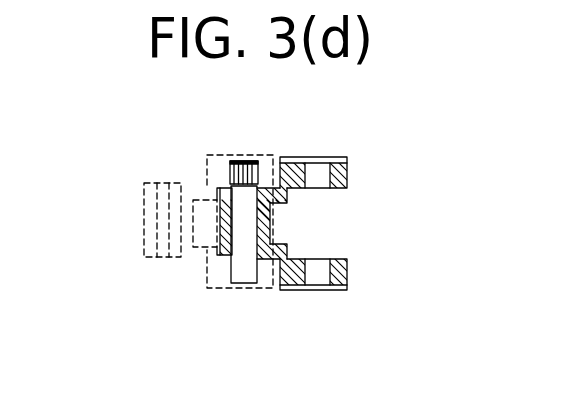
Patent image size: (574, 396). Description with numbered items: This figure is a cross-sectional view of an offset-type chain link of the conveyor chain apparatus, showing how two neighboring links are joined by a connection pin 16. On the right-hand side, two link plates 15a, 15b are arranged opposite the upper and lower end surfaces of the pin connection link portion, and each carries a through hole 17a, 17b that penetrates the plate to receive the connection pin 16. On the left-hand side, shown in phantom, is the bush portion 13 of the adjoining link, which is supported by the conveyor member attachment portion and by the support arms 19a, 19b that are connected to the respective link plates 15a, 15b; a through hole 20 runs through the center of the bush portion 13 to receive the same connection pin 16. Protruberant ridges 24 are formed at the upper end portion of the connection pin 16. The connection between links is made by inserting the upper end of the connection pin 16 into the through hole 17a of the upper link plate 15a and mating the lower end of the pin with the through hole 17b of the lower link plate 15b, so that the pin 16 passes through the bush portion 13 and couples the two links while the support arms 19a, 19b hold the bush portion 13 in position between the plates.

The bush portion 13 is at (147, 225).
The through hole 20 is at (161, 215).
The protruberant ridges 24 is at (233, 170).
The connection pin 16 is at (243, 228).
The support arm 19a is at (196, 190).
The support arm 19b is at (202, 255).
The link plate 15a is at (348, 172).
The link plate 15b is at (348, 272).
The through hole 17a is at (323, 174).
The through hole 17b is at (323, 275).